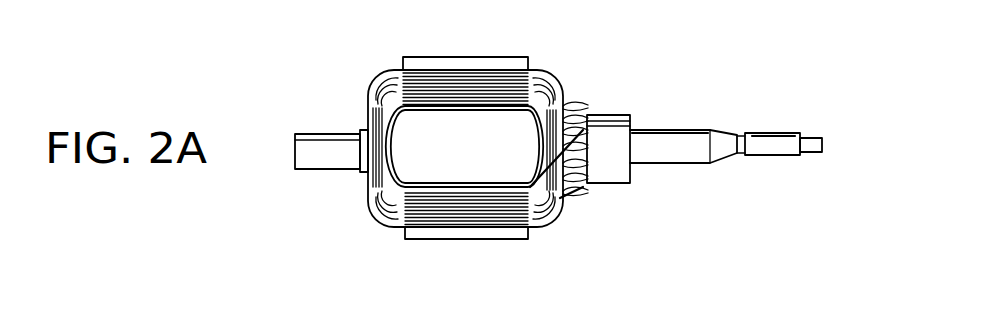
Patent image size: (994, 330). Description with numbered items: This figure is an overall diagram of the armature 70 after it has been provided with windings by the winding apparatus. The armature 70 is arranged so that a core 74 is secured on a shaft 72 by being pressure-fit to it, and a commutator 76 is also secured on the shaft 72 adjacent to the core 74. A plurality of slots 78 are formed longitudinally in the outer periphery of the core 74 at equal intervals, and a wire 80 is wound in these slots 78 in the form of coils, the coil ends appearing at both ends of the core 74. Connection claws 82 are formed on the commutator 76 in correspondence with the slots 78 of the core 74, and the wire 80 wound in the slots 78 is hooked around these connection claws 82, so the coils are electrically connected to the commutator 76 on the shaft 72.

The armature 70 is at (347, 77).
The shaft 72 is at (692, 147).
The core 74 is at (423, 59).
The commutator 76 is at (622, 112).
The slots 78 is at (458, 62).
The wire 80 is at (537, 107).
The connection claws 82 is at (585, 108).